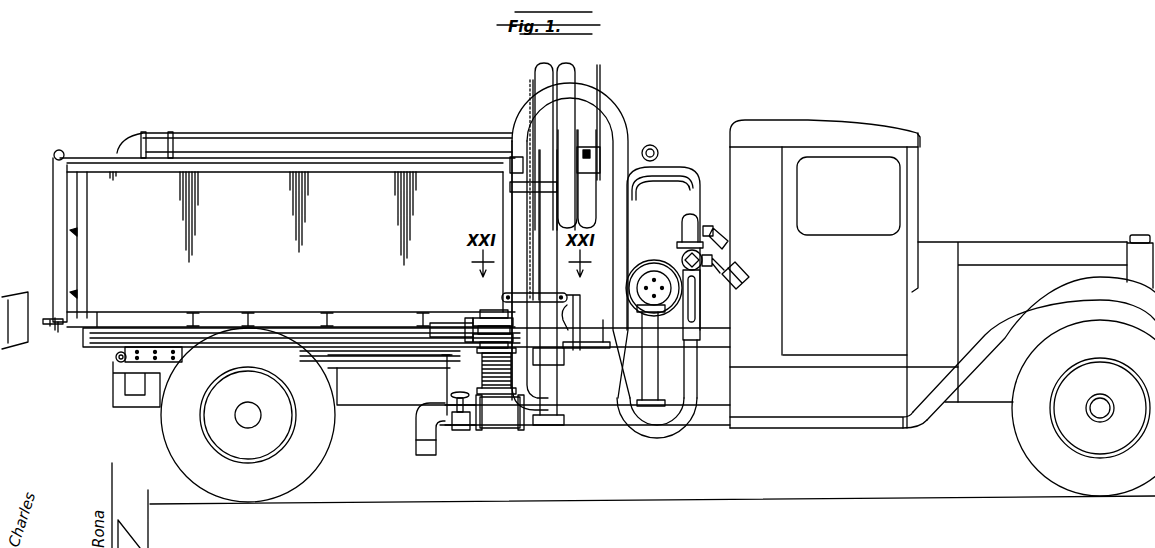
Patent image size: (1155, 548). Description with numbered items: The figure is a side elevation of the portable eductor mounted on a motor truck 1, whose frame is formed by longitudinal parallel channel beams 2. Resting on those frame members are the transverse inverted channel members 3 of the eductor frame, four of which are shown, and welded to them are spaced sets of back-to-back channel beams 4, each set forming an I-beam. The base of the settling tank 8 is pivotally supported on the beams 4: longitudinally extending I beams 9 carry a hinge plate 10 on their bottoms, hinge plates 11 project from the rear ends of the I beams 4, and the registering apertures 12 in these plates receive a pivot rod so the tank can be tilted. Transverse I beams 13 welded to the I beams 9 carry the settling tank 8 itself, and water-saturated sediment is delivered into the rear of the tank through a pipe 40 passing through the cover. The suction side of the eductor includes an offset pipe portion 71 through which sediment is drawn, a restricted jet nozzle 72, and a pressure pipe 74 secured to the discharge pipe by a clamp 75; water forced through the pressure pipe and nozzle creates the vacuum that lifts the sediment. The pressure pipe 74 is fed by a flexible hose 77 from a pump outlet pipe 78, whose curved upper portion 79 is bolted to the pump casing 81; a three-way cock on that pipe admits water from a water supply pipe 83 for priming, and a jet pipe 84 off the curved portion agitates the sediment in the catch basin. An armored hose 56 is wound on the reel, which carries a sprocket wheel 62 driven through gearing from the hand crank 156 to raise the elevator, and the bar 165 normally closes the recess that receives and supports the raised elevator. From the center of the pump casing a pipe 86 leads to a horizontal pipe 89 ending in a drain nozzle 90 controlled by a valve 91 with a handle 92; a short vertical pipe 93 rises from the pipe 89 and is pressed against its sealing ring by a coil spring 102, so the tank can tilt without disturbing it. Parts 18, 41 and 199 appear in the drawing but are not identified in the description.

The motor truck 1 is at (760, 357).
The parallel channel beams 2 is at (358, 397).
The transverse inverted channel members 3 is at (140, 372).
The channel beams 4 is at (360, 352).
The settling tank 8 is at (262, 190).
The longitudinally extending I beams 9 is at (95, 337).
The hinge plate 10 is at (110, 350).
The hinge plates 11 is at (167, 357).
The registering apertures 12 is at (118, 362).
The transverse I beams 13 is at (246, 316).
The rod 18 is at (600, 80).
The pipe 40 is at (360, 146).
The coupling 41 is at (478, 315).
The armored hose 56 is at (545, 64).
The sprocket wheel 62 is at (528, 86).
The offset pipe portion 71 is at (559, 426).
The jet nozzle 72 is at (697, 300).
The pressure pipe 74 is at (520, 213).
The clamp 75 is at (523, 187).
The flexible hose 77 is at (612, 113).
The pump outlet pipe 78 is at (699, 318).
The curved upper portion 79 is at (695, 220).
The pump casing 81 is at (650, 250).
The water supply pipe 83 is at (737, 276).
The jet pipe 84 is at (724, 240).
The pipe 86 is at (650, 383).
The horizontal pipe 89 is at (603, 425).
The drain nozzle 90 is at (424, 450).
The valve 91 is at (458, 425).
The handle 92 is at (443, 383).
The short vertical pipe 93 is at (500, 425).
The coil spring 102 is at (443, 372).
The hand crank 156 is at (573, 355).
The bar 165 is at (500, 296).
The link 199 is at (583, 312).